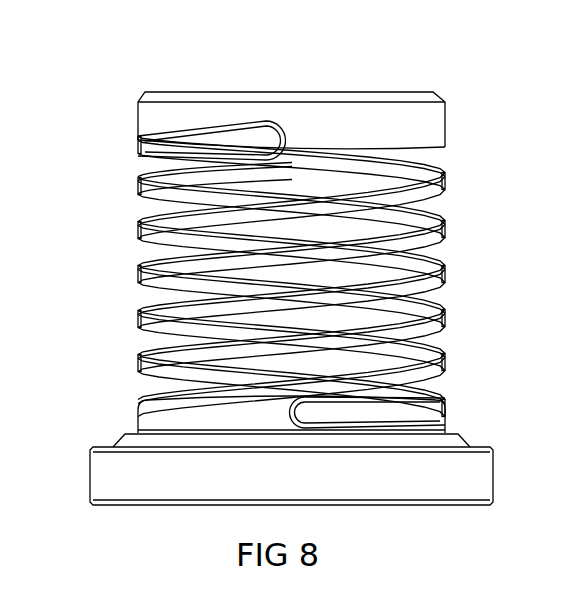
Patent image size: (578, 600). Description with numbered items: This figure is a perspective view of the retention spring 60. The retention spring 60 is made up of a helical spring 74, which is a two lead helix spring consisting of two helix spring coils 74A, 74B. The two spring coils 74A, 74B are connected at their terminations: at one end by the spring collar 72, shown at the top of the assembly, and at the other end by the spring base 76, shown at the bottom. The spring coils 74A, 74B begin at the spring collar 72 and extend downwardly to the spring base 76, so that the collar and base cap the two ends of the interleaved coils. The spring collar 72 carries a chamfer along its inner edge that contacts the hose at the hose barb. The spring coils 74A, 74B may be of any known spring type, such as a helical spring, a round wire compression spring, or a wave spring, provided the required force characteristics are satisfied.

The retention spring 60 is at (452, 114).
The spring collar 72 is at (336, 113).
The helical spring 74 is at (128, 275).
The helix spring coil 74A is at (150, 374).
The helix spring coil 74B is at (443, 370).
The spring base 76 is at (425, 485).